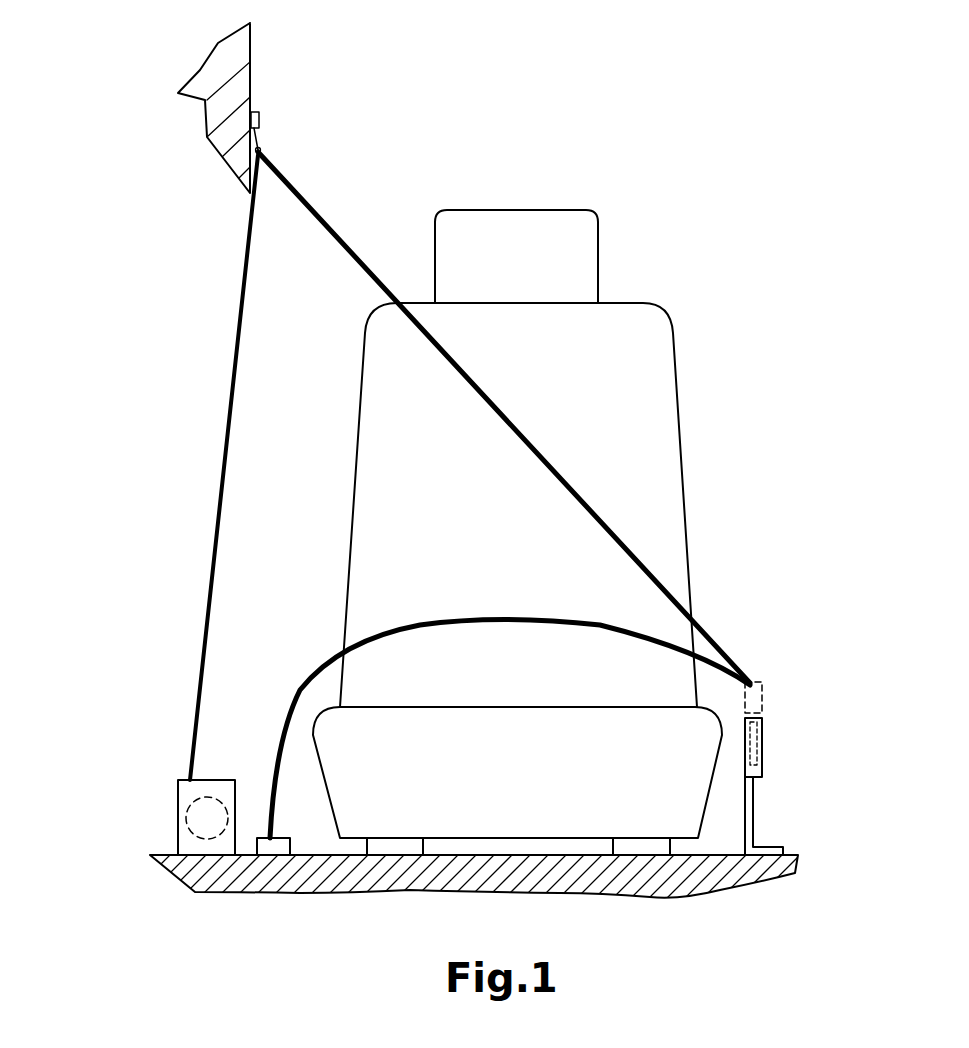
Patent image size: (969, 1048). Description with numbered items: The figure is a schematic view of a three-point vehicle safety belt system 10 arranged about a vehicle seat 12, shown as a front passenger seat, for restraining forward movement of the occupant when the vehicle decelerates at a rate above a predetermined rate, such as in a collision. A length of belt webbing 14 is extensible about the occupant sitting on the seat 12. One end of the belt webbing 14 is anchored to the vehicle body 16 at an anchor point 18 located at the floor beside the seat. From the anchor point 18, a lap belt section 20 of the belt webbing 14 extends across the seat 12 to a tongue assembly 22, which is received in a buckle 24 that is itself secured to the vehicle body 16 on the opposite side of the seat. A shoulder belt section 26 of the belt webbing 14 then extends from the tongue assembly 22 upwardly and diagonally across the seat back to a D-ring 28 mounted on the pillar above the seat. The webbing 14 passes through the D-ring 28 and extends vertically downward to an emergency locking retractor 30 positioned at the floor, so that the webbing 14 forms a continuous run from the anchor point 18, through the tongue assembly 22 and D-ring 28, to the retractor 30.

The three-point vehicle safety belt system 10 is at (170, 335).
The seat 12 is at (637, 325).
The belt webbing 14 is at (215, 508).
The vehicle body 16 is at (198, 872).
The anchor point 18 is at (292, 842).
The lap belt section 20 is at (545, 617).
The tongue assembly 22 is at (762, 688).
The buckle 24 is at (763, 774).
The shoulder belt section 26 is at (585, 497).
The D-ring 28 is at (257, 120).
The emergency locking retractor 30 is at (178, 782).